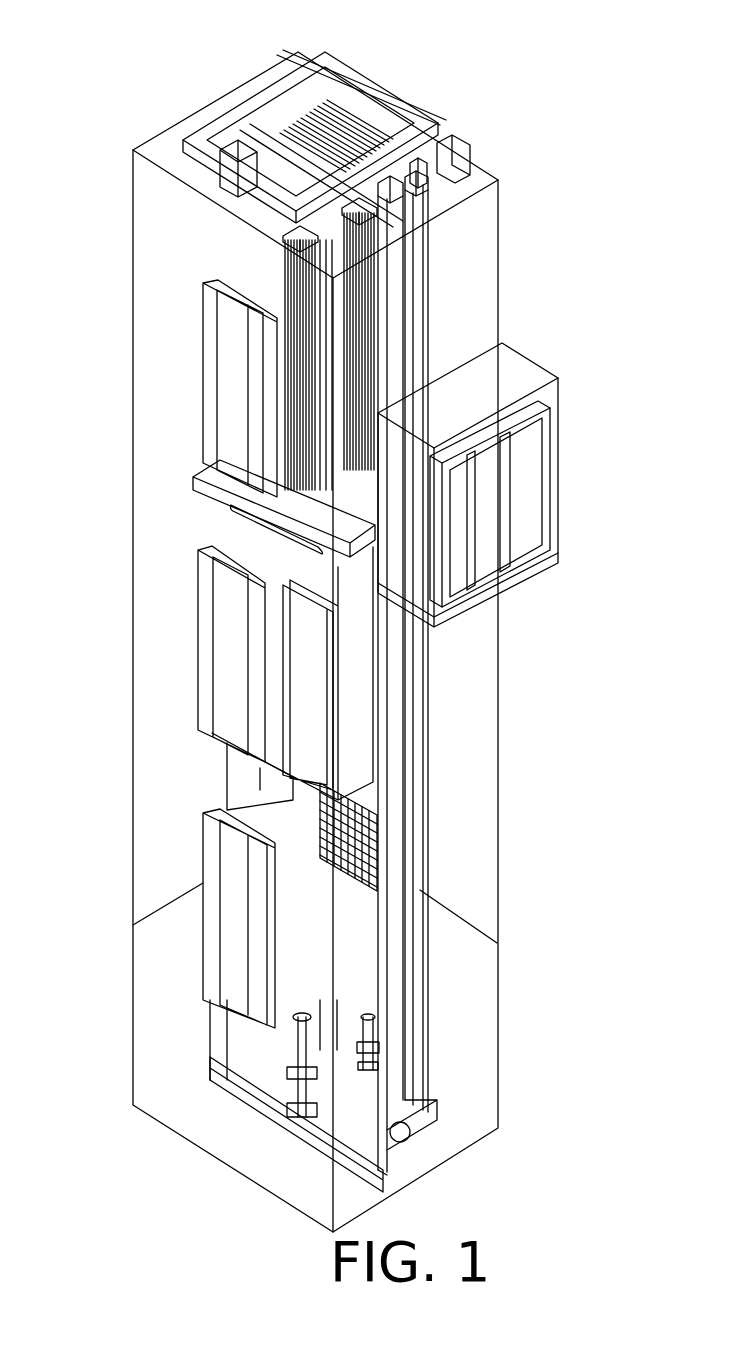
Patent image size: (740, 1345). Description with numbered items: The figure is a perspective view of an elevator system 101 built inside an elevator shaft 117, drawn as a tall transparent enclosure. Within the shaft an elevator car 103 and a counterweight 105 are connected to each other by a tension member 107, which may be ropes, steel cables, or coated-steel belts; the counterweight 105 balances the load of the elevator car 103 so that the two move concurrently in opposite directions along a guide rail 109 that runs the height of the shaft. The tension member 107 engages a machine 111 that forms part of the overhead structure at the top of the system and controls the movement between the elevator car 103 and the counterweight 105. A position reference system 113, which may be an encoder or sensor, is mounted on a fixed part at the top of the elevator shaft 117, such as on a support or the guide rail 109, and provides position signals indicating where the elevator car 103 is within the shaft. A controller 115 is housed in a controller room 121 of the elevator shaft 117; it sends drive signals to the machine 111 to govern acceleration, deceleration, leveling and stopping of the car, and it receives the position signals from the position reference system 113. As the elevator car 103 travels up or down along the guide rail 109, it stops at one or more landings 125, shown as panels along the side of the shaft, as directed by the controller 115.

The elevator system 101 is at (524, 70).
The elevator car 103 is at (315, 680).
The counterweight 105 is at (380, 852).
The tension member 107 is at (318, 382).
The guide rail 109 is at (400, 786).
The machine 111 is at (232, 135).
The position reference system 113 is at (380, 226).
The controller 115 is at (502, 498).
The elevator shaft 117 is at (185, 789).
The controller room 121 is at (518, 474).
The landings 125 is at (203, 380).